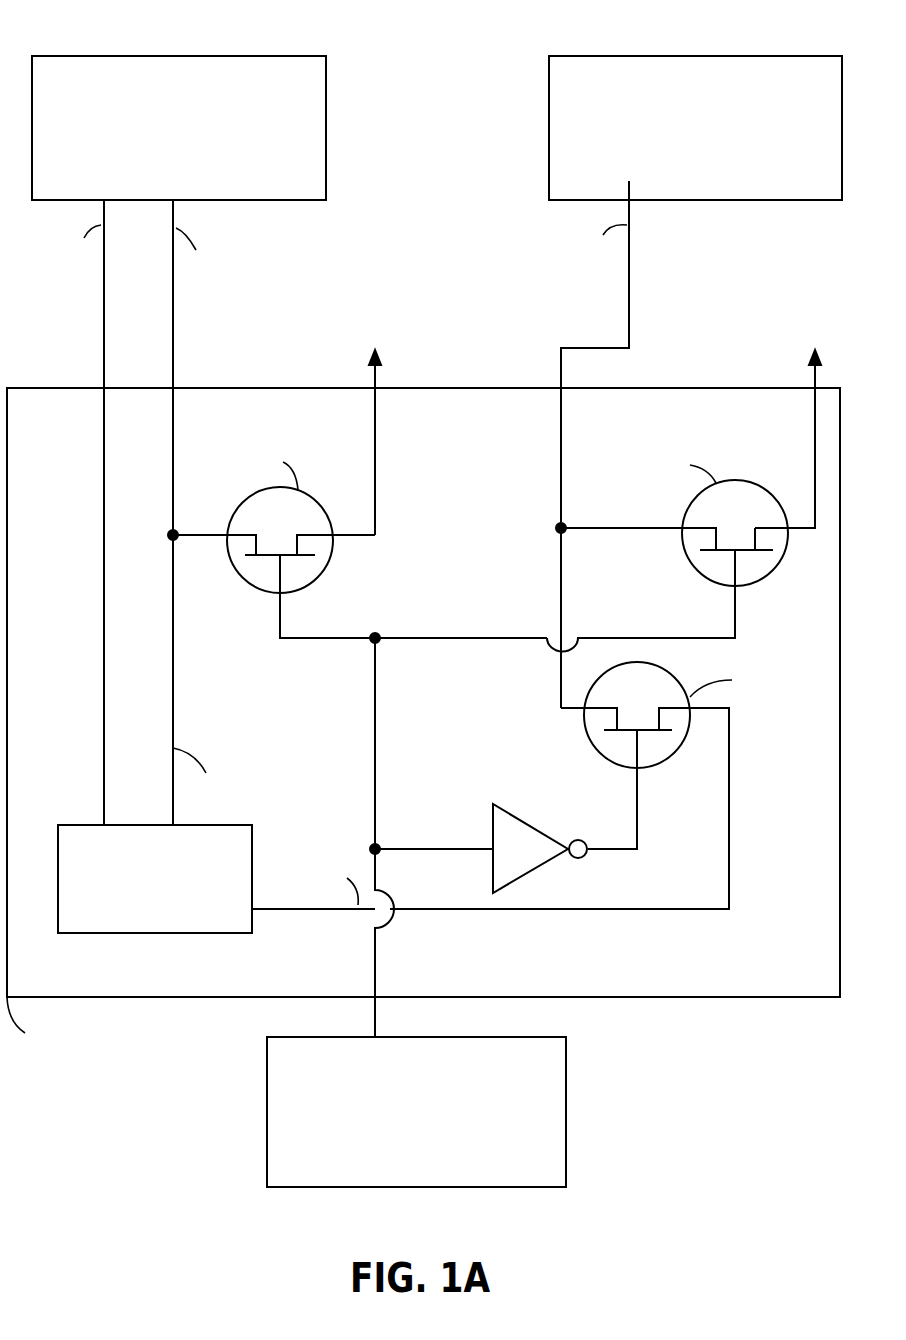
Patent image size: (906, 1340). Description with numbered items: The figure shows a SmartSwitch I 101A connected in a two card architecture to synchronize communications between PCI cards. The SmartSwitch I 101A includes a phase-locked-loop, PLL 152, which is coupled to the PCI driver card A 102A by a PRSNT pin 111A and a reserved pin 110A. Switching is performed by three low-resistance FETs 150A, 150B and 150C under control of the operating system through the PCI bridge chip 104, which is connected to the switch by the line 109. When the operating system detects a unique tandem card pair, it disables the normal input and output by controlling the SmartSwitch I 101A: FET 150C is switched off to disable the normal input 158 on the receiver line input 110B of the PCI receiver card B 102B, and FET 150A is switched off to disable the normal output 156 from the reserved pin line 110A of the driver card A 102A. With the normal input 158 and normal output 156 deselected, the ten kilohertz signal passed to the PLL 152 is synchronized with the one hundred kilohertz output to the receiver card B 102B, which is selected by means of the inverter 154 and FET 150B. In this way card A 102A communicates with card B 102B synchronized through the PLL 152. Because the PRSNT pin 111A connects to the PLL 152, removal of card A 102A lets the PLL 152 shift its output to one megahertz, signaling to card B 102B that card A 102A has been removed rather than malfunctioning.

The SmartSwitch I 101A is at (840, 997).
The PCI driver card A 102A is at (72, 55).
The PCI receiver card B 102B is at (585, 55).
The PRSNT pin (P) 111A is at (101, 338).
The reserved pin (R1) 110A is at (177, 334).
The line input R2 110B is at (623, 343).
The normal output 156 is at (377, 480).
The normal input 158 is at (812, 456).
The FET 150A is at (327, 565).
The FET 150B is at (667, 762).
The FET 150C is at (700, 578).
The inverter 154 is at (490, 838).
The phase-locked-loop (PLL) 152 is at (222, 935).
The line to PCI bridge chip 109 is at (408, 837).
The PCI bridge chip 104 is at (566, 1120).